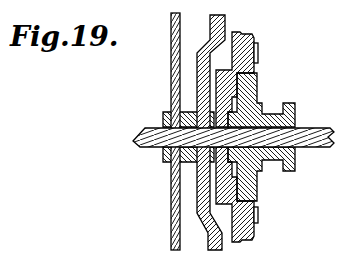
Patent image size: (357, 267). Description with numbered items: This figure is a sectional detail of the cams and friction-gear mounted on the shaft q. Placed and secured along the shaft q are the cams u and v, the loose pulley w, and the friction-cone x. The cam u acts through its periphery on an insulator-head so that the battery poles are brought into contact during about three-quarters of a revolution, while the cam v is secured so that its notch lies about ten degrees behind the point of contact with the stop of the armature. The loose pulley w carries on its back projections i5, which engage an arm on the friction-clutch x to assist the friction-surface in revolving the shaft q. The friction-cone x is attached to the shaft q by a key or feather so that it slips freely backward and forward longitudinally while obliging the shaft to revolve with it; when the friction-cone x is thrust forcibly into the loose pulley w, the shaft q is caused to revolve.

The cam u is at (164, 131).
The cam v is at (207, 131).
The loose pulley w is at (235, 125).
The friction-cone x is at (261, 137).
The projections i5 is at (259, 52).
The shaft q is at (219, 140).